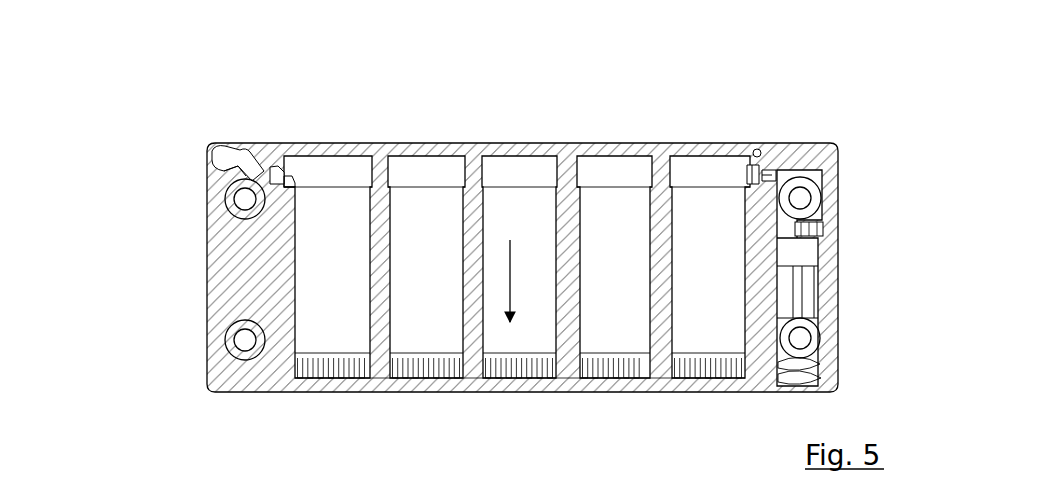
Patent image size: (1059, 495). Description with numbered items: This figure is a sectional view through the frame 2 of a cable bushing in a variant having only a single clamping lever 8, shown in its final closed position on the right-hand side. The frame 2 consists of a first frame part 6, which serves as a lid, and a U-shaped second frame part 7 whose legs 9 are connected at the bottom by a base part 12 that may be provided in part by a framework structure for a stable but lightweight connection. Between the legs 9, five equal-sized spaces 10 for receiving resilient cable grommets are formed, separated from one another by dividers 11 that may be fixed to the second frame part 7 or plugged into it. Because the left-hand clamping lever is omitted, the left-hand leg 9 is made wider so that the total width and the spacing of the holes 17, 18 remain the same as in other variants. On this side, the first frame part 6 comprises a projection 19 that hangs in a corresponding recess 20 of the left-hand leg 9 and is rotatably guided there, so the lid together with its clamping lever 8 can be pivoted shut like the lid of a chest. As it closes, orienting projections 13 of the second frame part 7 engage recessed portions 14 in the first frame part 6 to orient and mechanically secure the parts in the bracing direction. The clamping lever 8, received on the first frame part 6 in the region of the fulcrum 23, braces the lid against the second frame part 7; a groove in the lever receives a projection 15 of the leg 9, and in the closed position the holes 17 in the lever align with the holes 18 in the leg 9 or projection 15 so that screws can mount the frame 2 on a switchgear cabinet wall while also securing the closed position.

The frame 2 is at (460, 225).
The first frame part 6 is at (520, 152).
The second frame part 7 is at (436, 392).
The clamping lever 8 is at (820, 240).
The legs 9 is at (237, 298).
The spaces 10 is at (352, 264).
The dividers 11 is at (477, 310).
The base part 12 is at (538, 382).
The orienting projections 13 is at (279, 173).
The recessed portions 14 is at (284, 177).
The projections 15 is at (787, 283).
The holes 17 is at (523, 264).
The holes 18 is at (245, 199).
The projection 19 is at (223, 155).
The recess 20 is at (222, 168).
The fulcrum 23 is at (759, 149).